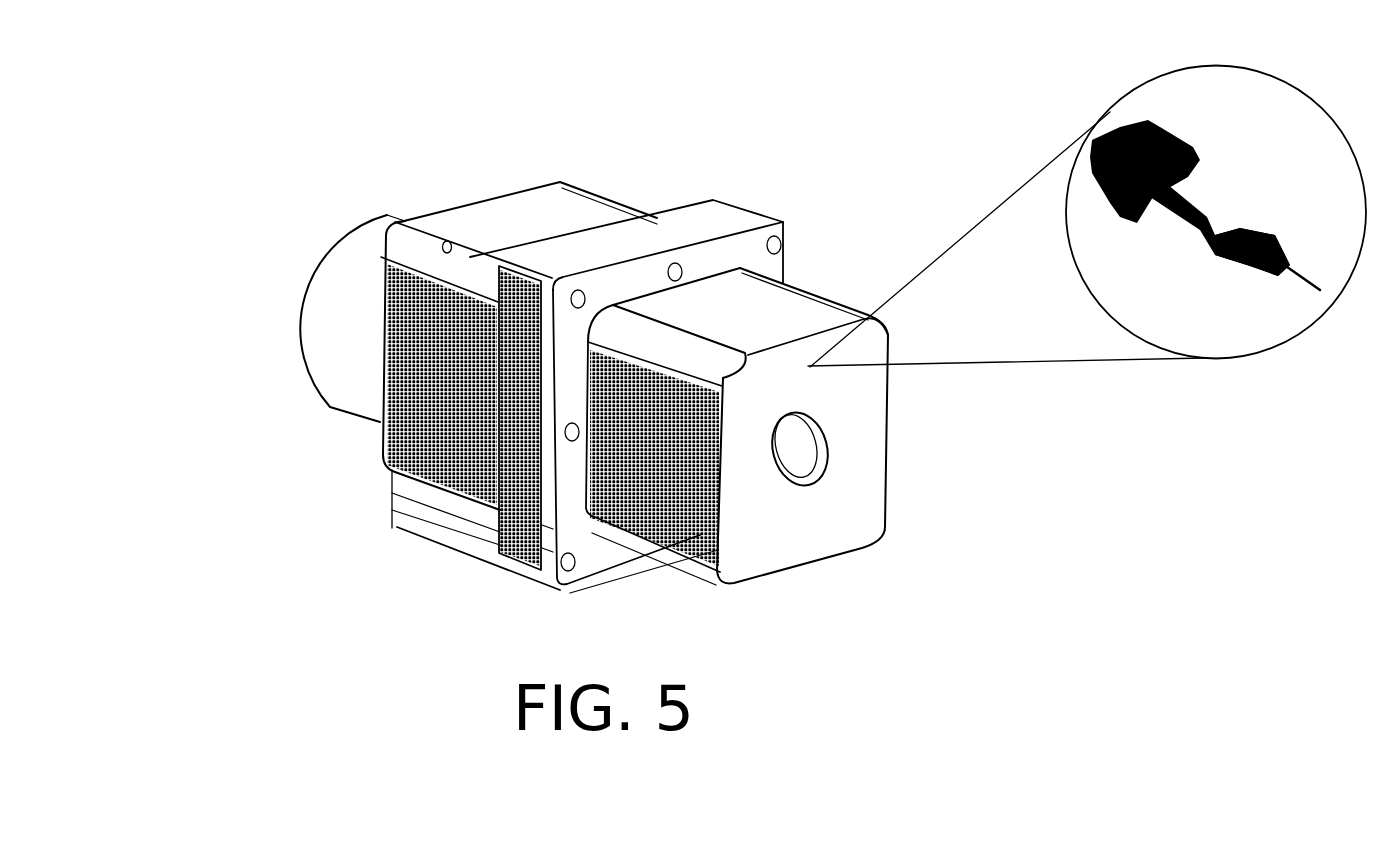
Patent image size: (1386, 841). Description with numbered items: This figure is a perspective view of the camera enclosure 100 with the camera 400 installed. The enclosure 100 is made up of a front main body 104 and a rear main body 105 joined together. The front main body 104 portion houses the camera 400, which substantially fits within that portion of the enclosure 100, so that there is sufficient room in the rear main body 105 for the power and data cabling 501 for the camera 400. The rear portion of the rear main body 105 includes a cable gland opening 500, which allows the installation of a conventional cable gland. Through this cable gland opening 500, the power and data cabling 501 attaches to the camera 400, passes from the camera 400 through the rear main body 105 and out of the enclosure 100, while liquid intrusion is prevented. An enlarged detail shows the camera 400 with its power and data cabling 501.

The camera enclosure 100 is at (322, 205).
The front main body 104 is at (617, 195).
The rear main body 105 is at (787, 258).
The camera 400 is at (403, 387).
The cable gland opening 500 is at (830, 438).
The power and data cabling 501 is at (1220, 230).